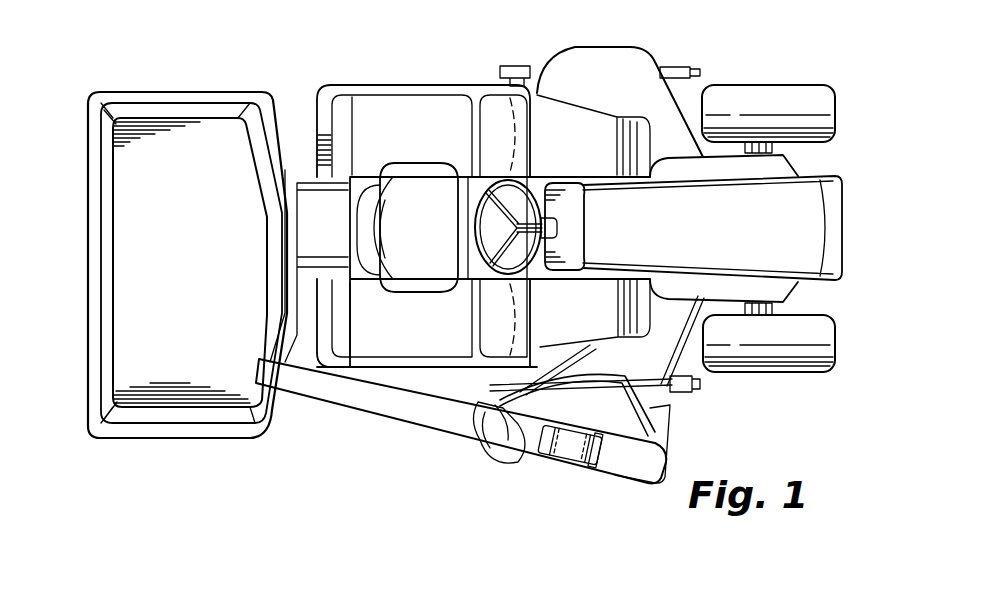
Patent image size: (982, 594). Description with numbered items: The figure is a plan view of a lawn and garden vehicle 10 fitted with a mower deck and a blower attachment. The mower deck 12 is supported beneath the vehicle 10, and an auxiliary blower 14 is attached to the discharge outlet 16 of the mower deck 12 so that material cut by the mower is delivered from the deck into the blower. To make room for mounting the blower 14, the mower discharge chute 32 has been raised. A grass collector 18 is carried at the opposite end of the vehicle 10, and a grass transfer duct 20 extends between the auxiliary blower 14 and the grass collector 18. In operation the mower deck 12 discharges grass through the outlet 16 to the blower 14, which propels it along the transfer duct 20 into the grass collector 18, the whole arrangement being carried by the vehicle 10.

The lawn and garden vehicle 10 is at (848, 150).
The mower deck 12 is at (642, 350).
The auxiliary blower 14 is at (553, 474).
The discharge outlet 16 is at (612, 420).
The grass collector 18 is at (197, 266).
The grass transfer duct 20 is at (380, 401).
The mower discharge chute 32 is at (608, 336).